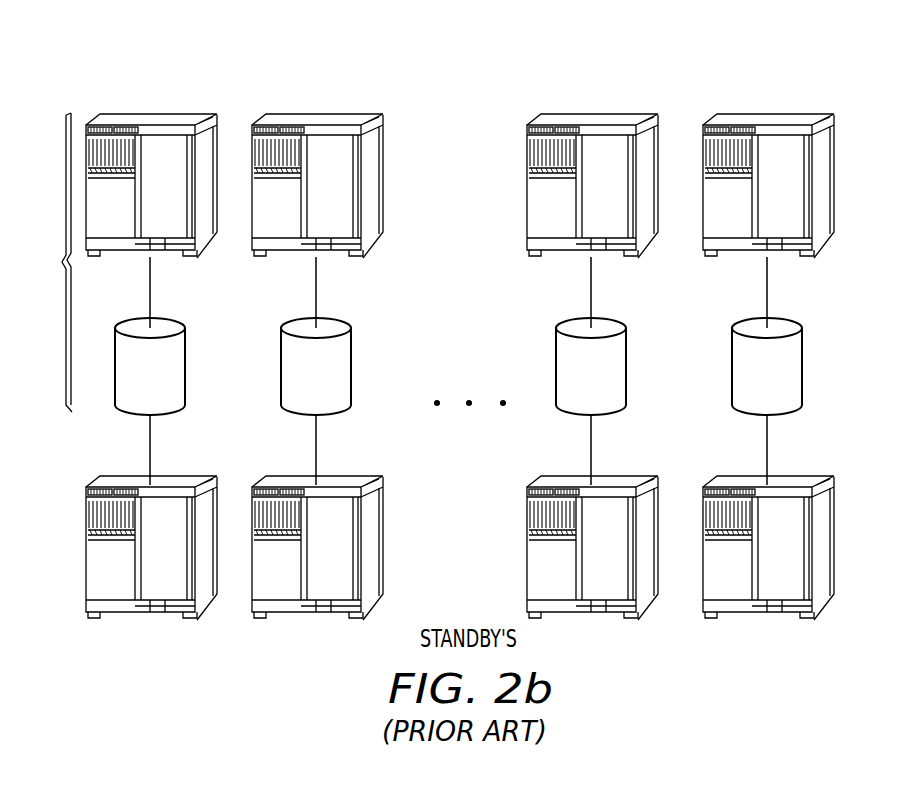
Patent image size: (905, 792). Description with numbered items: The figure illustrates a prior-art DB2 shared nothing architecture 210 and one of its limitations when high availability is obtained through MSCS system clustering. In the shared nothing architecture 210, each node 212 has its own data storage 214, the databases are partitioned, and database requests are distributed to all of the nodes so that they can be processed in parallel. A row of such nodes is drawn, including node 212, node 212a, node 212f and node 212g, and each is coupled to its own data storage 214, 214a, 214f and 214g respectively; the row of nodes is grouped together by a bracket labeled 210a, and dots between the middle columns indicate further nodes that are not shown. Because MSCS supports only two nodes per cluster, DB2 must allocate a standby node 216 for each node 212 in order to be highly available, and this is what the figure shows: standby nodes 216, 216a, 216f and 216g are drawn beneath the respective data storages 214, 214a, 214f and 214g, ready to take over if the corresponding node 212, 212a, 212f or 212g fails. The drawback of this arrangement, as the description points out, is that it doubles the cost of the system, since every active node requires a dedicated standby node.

The shared nothing architecture 210 is at (86, 70).
The primary server group 210a is at (40, 262).
The node 212 is at (157, 118).
The node 212a is at (323, 118).
The primary server 212f is at (598, 118).
The primary server 212g is at (774, 118).
The data storage 214 is at (185, 374).
The data storage 214a is at (351, 374).
The shared disk storage 214f is at (626, 374).
The shared disk storage 214g is at (802, 373).
The standby node 216 is at (177, 484).
The standby server 216a is at (343, 484).
The standby server 216f is at (618, 484).
The standby server 216g is at (794, 484).